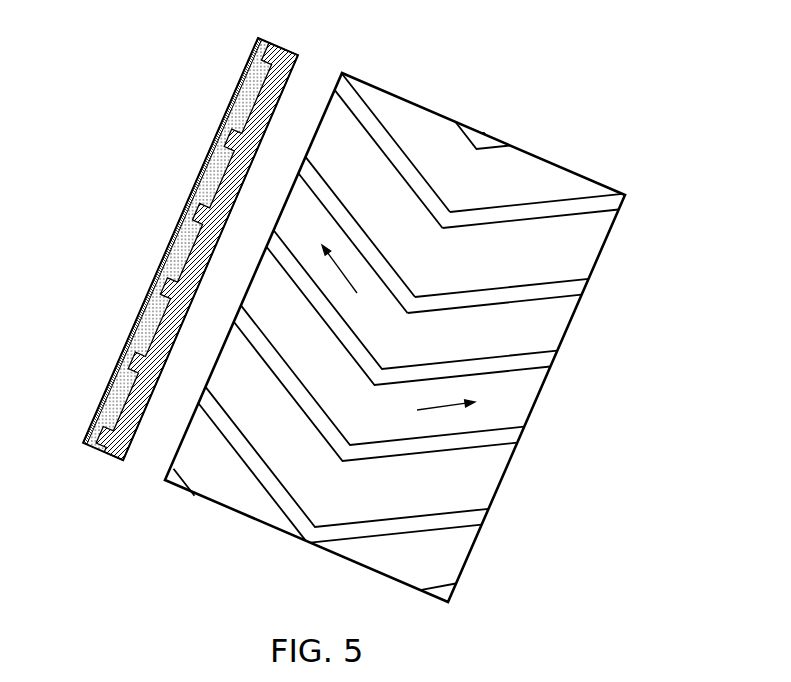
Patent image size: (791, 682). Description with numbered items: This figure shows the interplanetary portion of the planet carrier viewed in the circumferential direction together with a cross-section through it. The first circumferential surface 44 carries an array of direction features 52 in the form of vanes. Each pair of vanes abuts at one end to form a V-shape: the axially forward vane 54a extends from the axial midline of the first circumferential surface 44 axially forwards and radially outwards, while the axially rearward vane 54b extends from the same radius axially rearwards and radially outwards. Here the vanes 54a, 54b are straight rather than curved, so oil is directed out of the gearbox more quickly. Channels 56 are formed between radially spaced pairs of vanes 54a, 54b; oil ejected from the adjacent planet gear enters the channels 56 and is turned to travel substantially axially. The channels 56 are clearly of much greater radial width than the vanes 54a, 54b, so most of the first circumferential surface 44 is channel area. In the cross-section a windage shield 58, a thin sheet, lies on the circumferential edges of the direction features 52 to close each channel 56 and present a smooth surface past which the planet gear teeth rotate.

The first circumferential surface 44 is at (456, 96).
The direction features 52 is at (478, 440).
The axially forward vane 54a is at (373, 120).
The axially rearward vane 54b is at (552, 292).
The channels 56 is at (258, 80).
The windage shield 58 is at (132, 325).